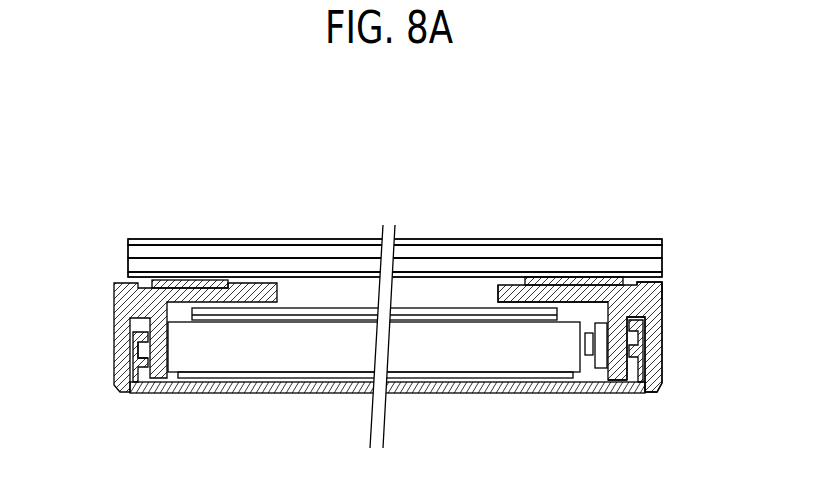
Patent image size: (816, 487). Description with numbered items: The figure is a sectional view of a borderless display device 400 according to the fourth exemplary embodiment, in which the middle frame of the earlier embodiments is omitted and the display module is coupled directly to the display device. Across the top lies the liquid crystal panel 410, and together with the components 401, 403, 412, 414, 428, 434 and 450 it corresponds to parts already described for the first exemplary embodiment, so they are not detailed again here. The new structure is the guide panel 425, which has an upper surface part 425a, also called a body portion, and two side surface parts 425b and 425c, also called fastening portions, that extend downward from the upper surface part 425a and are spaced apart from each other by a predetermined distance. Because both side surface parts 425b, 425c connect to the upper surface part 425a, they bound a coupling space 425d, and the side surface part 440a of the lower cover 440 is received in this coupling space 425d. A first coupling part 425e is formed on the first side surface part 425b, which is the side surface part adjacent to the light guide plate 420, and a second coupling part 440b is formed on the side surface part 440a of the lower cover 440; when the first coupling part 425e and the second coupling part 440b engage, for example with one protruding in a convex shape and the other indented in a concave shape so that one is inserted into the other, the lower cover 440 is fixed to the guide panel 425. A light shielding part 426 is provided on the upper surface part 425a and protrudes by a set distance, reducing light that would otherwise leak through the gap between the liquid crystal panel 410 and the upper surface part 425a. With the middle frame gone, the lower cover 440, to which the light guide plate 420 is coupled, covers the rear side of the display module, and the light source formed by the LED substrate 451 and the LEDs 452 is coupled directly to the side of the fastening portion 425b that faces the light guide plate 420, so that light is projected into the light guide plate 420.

The display device 400 is at (533, 238).
The liquid crystal panel 410 is at (286, 168).
The corresponding component 412 is at (158, 273).
The corresponding component 401 is at (200, 263).
The corresponding component 403 is at (248, 255).
The corresponding component 414 is at (280, 242).
The corresponding component 450 is at (158, 288).
The lower cover 440 is at (263, 391).
The side surface part of lower cover 440a is at (137, 368).
The second coupling part 440b is at (137, 357).
The guide panel 425 is at (742, 275).
The upper surface part 425a is at (592, 300).
The first side surface part 425b is at (627, 383).
The second side surface part 425c is at (657, 353).
The coupling space 425d is at (636, 322).
The first coupling part 425e is at (640, 360).
The light shielding part 426 is at (662, 283).
The light guide plate 420 is at (197, 352).
The corresponding component 428 is at (327, 375).
The corresponding component 434 is at (457, 330).
The LED substrate 451 is at (598, 368).
The LEDs 452 is at (587, 347).